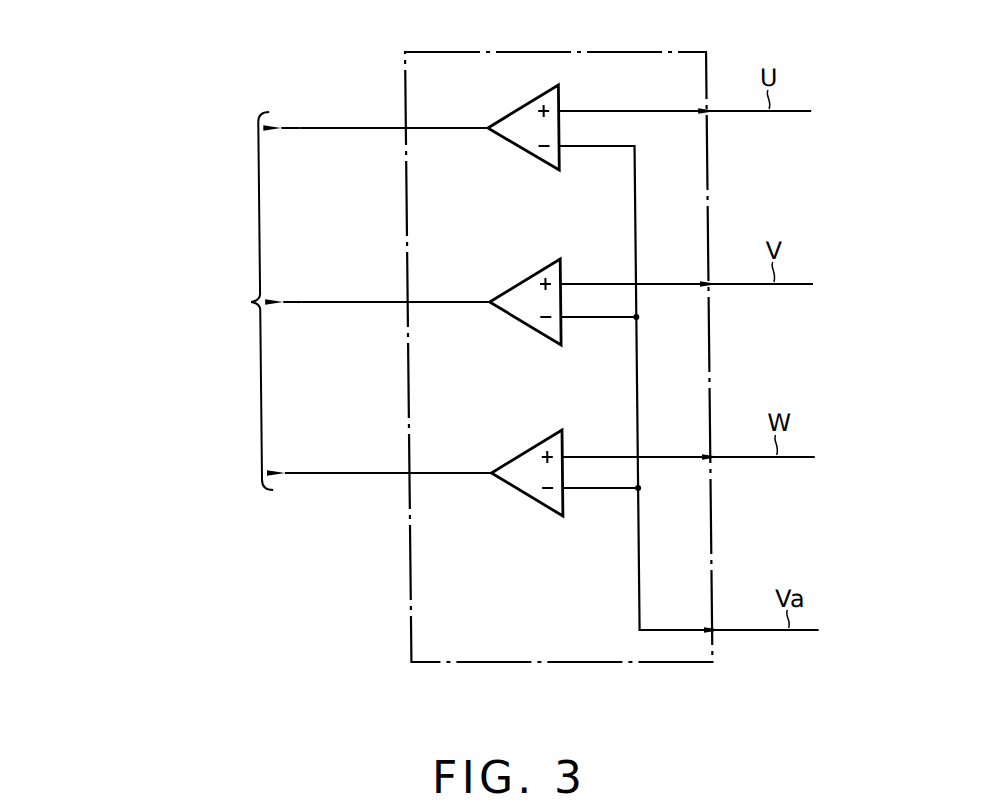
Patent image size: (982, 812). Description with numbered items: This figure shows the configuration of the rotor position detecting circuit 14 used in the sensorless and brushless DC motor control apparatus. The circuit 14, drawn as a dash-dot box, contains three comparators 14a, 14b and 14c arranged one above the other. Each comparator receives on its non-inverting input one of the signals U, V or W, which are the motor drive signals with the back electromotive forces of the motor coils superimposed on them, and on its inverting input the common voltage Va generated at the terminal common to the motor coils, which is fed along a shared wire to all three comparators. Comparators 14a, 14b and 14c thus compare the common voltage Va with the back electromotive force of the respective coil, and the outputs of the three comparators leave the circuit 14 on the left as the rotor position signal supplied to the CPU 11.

The rotor position detecting circuit 14 is at (664, 50).
The comparator 14a is at (540, 166).
The comparator 14b is at (545, 337).
The comparator 14c is at (548, 513).
The CPU 11 is at (174, 301).